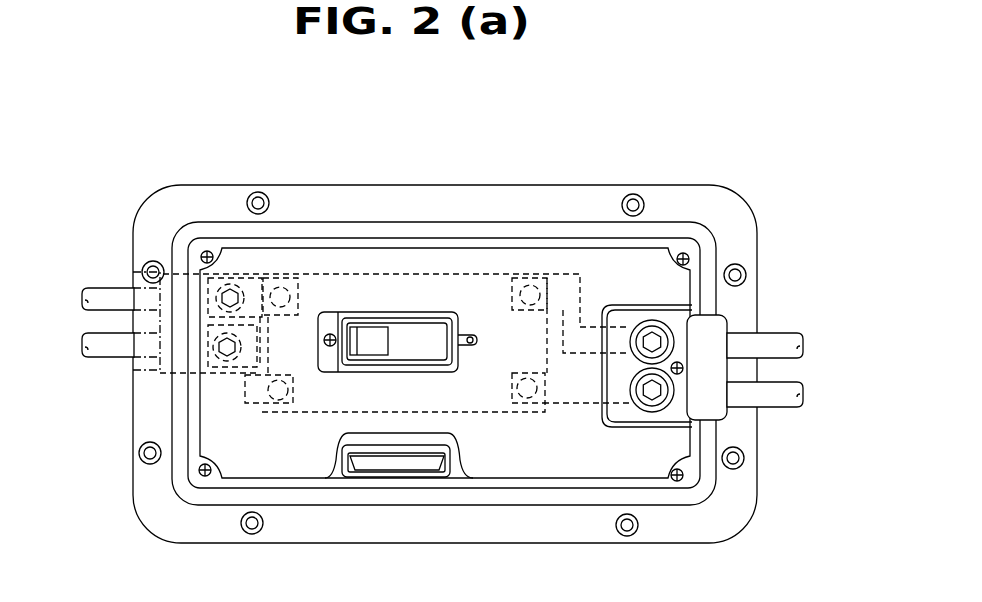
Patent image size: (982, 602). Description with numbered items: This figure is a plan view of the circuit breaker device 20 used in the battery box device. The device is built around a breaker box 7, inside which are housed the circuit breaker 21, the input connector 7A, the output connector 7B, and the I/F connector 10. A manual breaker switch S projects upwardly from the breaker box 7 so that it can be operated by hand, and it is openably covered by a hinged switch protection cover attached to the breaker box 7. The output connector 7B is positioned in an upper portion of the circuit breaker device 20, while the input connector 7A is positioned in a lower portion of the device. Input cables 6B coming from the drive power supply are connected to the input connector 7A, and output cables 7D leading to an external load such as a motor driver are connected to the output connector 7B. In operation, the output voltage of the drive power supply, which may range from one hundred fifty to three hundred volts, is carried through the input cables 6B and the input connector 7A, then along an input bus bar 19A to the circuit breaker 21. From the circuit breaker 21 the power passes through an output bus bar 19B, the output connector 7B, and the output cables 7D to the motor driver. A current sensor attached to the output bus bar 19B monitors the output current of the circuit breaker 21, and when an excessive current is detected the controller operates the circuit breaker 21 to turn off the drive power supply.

The circuit breaker device 20 is at (533, 100).
The breaker box 7 is at (490, 183).
The input connector 7A is at (182, 277).
The output connector 7B is at (705, 335).
The output cables 7D is at (805, 345).
The input cables 6B is at (84, 300).
The I/F connector 10 is at (397, 463).
The input bus bar 19A is at (232, 360).
The output bus bar 19B is at (573, 357).
The circuit breaker 21 is at (323, 395).
The manual breaker switch S is at (373, 337).